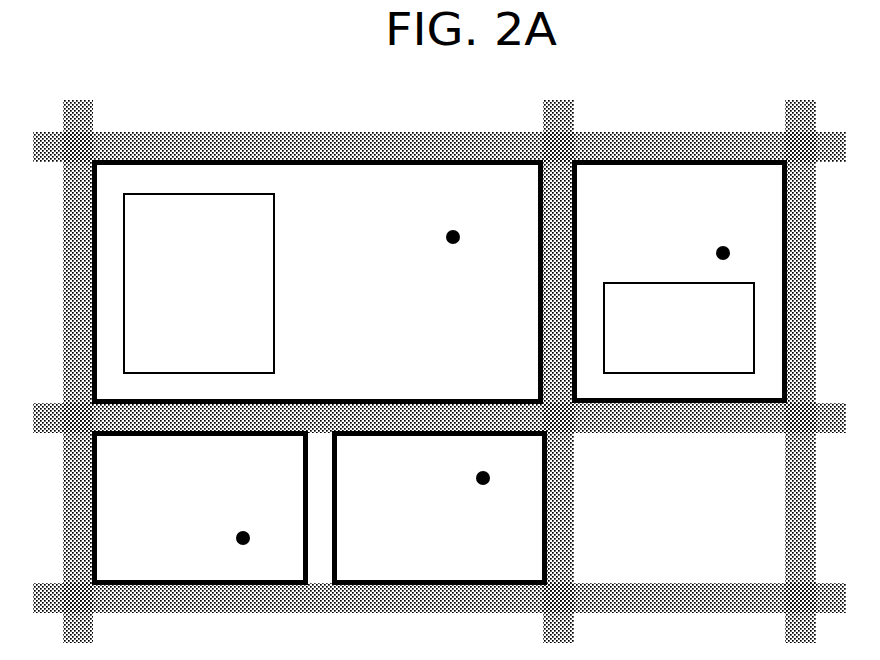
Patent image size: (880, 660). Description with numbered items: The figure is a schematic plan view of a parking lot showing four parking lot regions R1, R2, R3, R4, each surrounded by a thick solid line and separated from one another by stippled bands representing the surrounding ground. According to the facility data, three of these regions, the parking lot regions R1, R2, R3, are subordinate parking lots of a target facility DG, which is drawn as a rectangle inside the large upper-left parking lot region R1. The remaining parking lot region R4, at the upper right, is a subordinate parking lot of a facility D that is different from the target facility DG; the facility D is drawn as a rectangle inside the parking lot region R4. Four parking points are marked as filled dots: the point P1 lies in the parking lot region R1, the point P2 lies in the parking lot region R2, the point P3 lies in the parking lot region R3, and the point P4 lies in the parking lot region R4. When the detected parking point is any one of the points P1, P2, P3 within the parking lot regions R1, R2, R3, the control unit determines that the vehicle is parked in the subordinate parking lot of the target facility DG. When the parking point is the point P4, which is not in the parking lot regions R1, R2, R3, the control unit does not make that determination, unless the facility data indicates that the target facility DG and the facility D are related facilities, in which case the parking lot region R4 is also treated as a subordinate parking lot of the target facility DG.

The parking lot region R1 is at (333, 293).
The parking lot region R2 is at (213, 518).
The parking lot region R3 is at (453, 519).
The parking lot region R4 is at (695, 230).
The facility D is at (687, 337).
The target facility DG is at (202, 291).
The point P1 is at (472, 239).
The point P2 is at (261, 538).
The point P3 is at (501, 478).
The point P4 is at (741, 254).